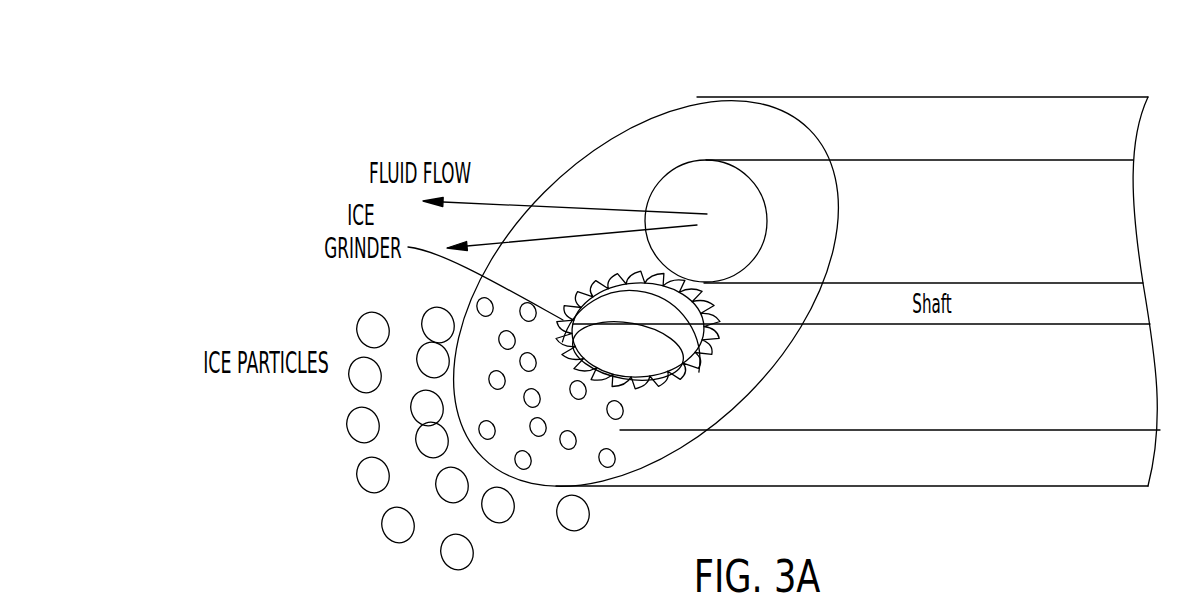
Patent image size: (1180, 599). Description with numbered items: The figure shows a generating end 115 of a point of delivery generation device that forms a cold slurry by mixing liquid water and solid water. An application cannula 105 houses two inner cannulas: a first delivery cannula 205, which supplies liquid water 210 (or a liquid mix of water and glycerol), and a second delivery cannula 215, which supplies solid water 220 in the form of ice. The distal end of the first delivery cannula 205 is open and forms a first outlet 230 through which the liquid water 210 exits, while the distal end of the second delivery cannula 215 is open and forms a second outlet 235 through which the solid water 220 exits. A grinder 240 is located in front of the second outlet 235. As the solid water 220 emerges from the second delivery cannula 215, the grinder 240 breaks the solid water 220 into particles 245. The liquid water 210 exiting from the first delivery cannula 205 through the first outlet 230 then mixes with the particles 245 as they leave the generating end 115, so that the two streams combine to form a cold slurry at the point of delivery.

The generating end 115 is at (522, 117).
The application cannula 105 is at (882, 97).
The first delivery cannula 205 is at (938, 160).
The liquid water 210 is at (993, 225).
The solid water 220 is at (961, 377).
The second delivery cannula 215 is at (983, 430).
The first outlet 230 is at (760, 187).
The second outlet 235 is at (673, 373).
The grinder 240 is at (703, 377).
The particles 245 is at (492, 523).